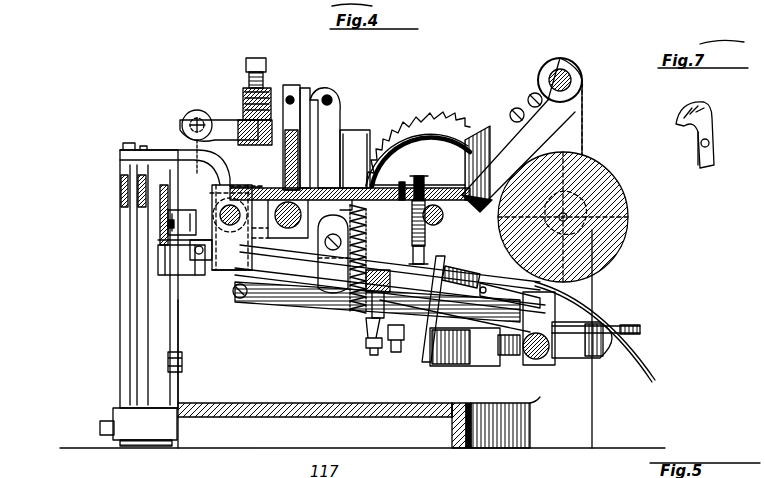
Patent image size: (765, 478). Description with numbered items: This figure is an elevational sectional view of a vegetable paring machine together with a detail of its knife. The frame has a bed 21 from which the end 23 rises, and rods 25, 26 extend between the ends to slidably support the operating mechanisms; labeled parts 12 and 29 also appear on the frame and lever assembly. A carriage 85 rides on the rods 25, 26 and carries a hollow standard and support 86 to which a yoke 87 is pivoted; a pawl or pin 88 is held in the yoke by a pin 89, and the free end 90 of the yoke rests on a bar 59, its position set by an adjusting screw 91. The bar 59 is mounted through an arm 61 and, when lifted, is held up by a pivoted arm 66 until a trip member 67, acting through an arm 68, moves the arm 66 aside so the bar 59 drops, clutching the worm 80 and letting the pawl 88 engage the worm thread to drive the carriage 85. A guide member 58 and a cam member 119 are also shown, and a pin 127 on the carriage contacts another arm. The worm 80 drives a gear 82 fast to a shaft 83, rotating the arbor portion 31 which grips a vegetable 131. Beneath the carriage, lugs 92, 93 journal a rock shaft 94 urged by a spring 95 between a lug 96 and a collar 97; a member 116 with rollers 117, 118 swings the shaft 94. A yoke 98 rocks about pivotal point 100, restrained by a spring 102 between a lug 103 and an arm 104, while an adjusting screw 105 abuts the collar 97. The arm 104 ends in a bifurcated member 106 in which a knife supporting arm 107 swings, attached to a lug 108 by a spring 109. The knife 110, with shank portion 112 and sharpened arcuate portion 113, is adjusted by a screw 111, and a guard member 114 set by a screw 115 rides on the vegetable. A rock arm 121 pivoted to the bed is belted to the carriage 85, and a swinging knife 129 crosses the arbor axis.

In FIG. 4, the lever 12 is at (572, 112).
In FIG. 4, the bed 21 is at (232, 412).
In FIG. 4, the end 23 is at (315, 358).
In FIG. 4, the rod 25 is at (400, 200).
In FIG. 4, the rod 26 is at (232, 222).
In FIG. 4, the arm 29 is at (599, 118).
In FIG. 4, the portion of the work arbor 31 is at (628, 238).
In FIG. 4, the guide member 58 is at (185, 150).
In FIG. 4, the bar 59 is at (255, 122).
In FIG. 4, the arm 61 is at (245, 118).
In FIG. 4, the pivoted arm 66 is at (197, 125).
In FIG. 4, the trip member 67 is at (634, 326).
In FIG. 4, the arm 68 is at (262, 302).
In FIG. 4, the worm 80 is at (280, 220).
In FIG. 4, the gear 82 is at (445, 130).
In FIG. 4, the shaft 83 is at (444, 216).
In FIG. 4, the carriage 85 is at (335, 185).
In FIG. 4, the hollow standard and support 86 is at (345, 145).
In FIG. 4, the yoke 87 is at (322, 96).
In FIG. 4, the pawl or pin 88 is at (300, 88).
In FIG. 4, the pin 89 is at (300, 100).
In FIG. 4, the free end of the yoke 90 is at (268, 90).
In FIG. 4, the adjusting screw 91 is at (256, 60).
In FIG. 4, the lug 92 is at (227, 275).
In FIG. 4, the lug 93 is at (381, 292).
In FIG. 4, the rock shaft 94 is at (280, 248).
In FIG. 4, the spring 95 is at (427, 238).
In FIG. 4, the lug 96 is at (410, 194).
In FIG. 4, the collar 97 is at (418, 268).
In FIG. 4, the yoke 98 is at (300, 303).
In FIG. 4, the pivotal point 100 is at (333, 230).
In FIG. 4, the spring 102 is at (350, 282).
In FIG. 4, the lug 103 is at (350, 207).
In FIG. 4, the arm 104 is at (406, 352).
In FIG. 4, the adjusting screw 105 is at (374, 356).
In FIG. 4, the bifurcated member 106 is at (560, 360).
In FIG. 4, the knife supporting member or arm 107 is at (594, 355).
In FIG. 4, the lug 108 is at (438, 368).
In FIG. 4, the spring 109 is at (466, 272).
In FIG. 4, the knife 110 is at (598, 300).
In FIG. 7, the screw 111 is at (704, 148).
In FIG. 7, the shank portion 112 is at (697, 145).
In FIG. 7, the arcuate portion 113 is at (682, 108).
In FIG. 4, the guard member 114 is at (492, 285).
In FIG. 4, the screw 115 is at (526, 358).
In FIG. 4, the member 116 is at (199, 255).
In FIG. 4, the roller 117 is at (160, 252).
In FIG. 4, the roller 118 is at (168, 222).
In FIG. 4, the member 119 is at (160, 200).
In FIG. 4, the rock arm 121 is at (125, 368).
In FIG. 4, the pin 127 is at (570, 72).
In FIG. 4, the knife 129 is at (487, 160).
In FIG. 4, the vegetable 131 is at (628, 210).